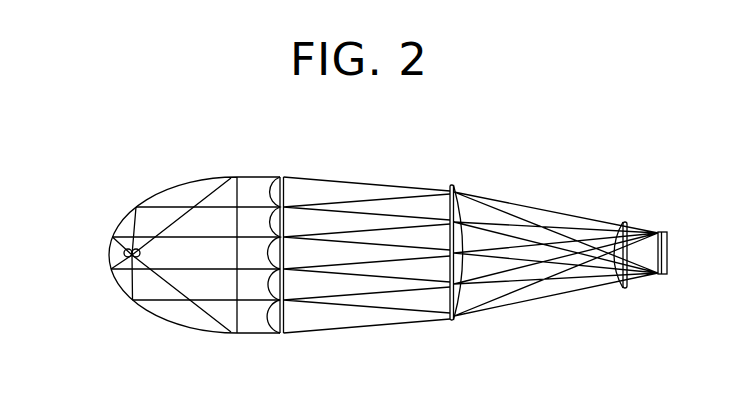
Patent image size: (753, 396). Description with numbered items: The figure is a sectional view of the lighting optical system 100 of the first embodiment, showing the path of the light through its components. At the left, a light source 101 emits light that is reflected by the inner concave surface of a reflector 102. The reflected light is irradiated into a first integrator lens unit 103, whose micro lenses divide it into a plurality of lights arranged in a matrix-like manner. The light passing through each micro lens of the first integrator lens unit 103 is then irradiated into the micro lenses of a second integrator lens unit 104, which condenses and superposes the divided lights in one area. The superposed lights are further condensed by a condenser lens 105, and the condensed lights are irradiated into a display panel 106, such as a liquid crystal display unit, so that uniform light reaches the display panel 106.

The lighting optical system 100 is at (505, 153).
The light source 101 is at (126, 256).
The reflector 102 is at (158, 313).
The first integrator lens unit 103 is at (281, 334).
The second integrator lens unit 104 is at (452, 321).
The condenser lens 105 is at (626, 289).
The display panel 106 is at (667, 275).